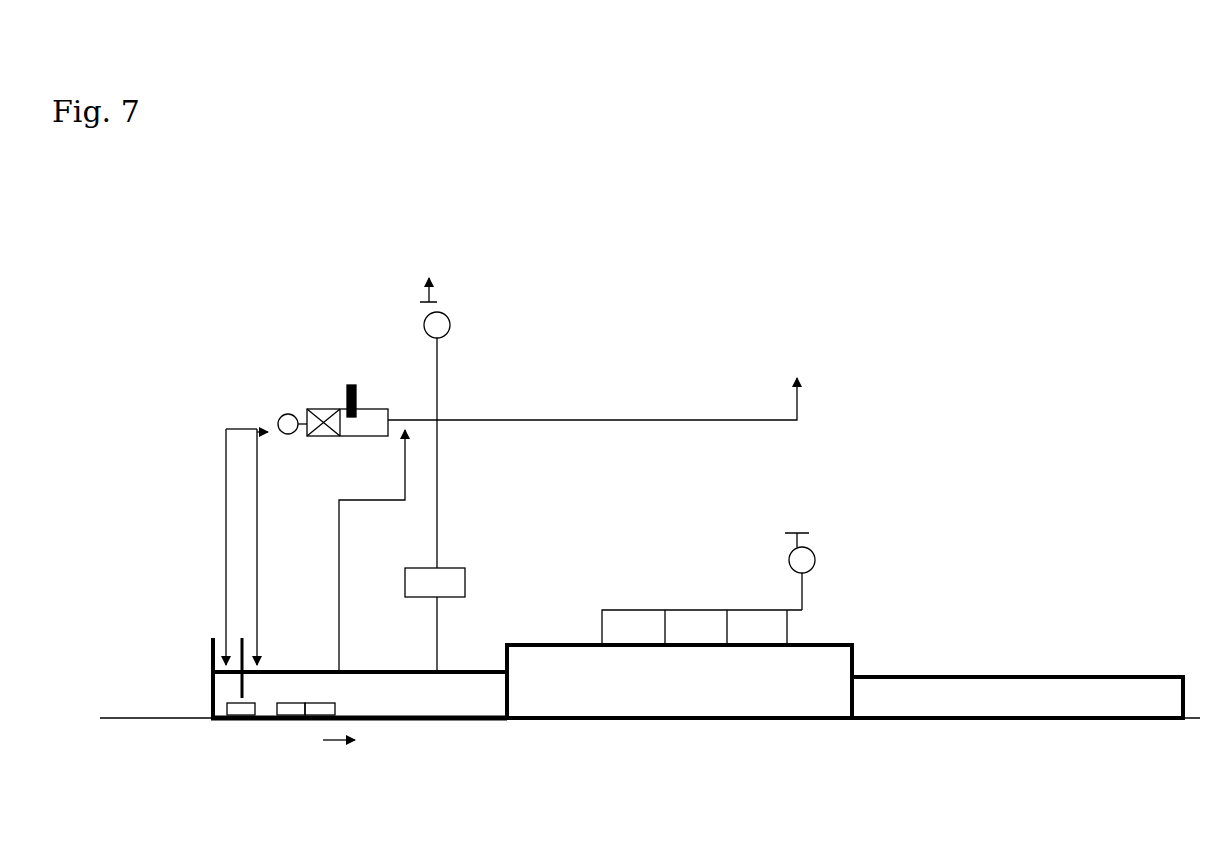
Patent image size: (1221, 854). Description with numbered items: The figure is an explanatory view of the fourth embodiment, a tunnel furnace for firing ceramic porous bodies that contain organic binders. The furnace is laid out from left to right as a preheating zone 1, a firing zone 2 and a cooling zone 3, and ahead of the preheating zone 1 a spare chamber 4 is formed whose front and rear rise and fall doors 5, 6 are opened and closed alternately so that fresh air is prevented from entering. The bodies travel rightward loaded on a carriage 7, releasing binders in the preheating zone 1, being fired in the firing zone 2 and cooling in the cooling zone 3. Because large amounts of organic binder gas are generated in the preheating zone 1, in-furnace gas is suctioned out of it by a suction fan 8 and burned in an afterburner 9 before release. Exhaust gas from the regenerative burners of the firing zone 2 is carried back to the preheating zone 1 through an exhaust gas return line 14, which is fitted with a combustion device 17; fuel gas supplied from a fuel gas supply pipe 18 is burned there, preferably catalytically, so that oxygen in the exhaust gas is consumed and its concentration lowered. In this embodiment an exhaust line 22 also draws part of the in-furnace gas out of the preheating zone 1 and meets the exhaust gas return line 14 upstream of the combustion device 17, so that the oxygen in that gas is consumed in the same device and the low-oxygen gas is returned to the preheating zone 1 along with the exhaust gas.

The preheating zone 1 is at (382, 682).
The firing zone 2 is at (560, 645).
The cooling zone 3 is at (1018, 688).
The spare chamber 4 is at (228, 684).
The rise and fall door 5 is at (212, 650).
The rise and fall door 6 is at (248, 655).
The carriage 7 is at (297, 722).
The suction fan 8 is at (452, 325).
The afterburner 9 is at (448, 568).
The exhaust gas return line 14 is at (654, 418).
The combustion device 17 is at (326, 409).
The fuel gas supply pipe 18 is at (349, 385).
The exhaust line 22 is at (342, 510).